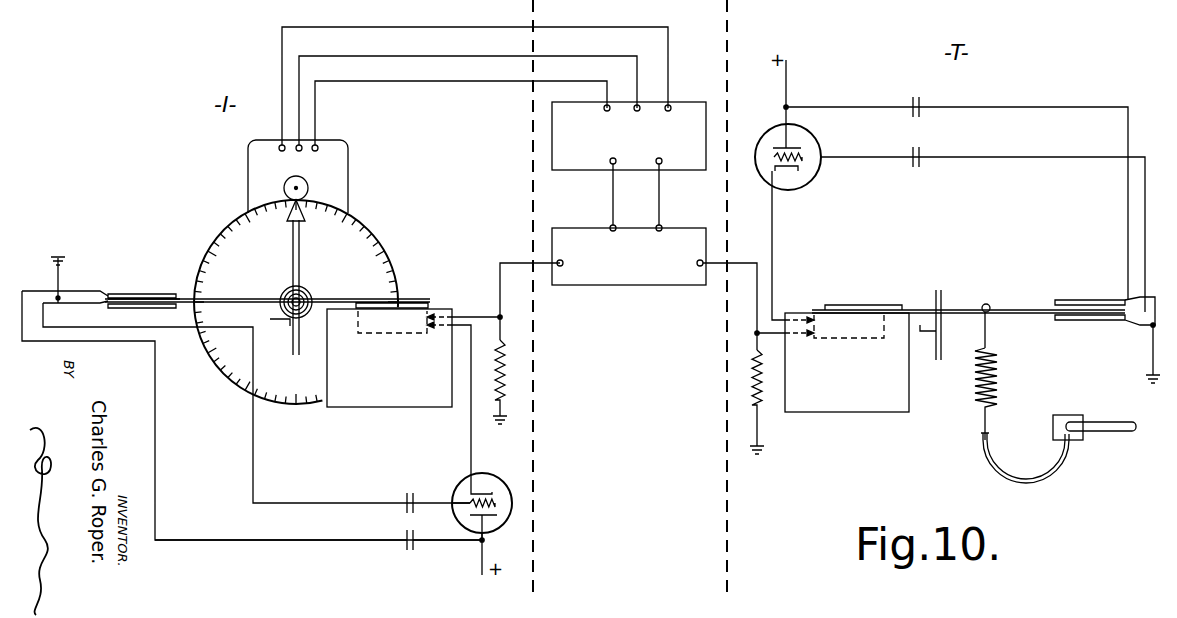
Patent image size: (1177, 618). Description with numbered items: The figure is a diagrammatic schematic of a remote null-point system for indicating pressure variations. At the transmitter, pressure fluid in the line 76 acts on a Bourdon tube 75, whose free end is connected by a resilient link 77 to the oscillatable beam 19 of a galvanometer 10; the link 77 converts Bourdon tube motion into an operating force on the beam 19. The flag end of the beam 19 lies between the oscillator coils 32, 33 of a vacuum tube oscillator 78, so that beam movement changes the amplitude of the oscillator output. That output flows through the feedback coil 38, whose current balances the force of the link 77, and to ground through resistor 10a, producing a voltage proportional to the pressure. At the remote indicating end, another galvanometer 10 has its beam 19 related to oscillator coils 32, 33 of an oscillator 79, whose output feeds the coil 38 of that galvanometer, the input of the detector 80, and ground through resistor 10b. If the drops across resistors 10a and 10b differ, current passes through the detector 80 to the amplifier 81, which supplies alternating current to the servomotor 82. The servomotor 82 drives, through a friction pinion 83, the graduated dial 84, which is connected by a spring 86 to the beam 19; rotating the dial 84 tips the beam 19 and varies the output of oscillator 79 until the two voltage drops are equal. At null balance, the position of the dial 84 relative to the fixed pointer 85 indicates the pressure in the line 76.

The galvanometer 10 is at (618, 360).
The resistor 10a is at (752, 392).
The resistor 10b is at (500, 392).
The oscillatable beam 19 is at (410, 306).
The oscillator coil 32 is at (159, 293).
The oscillator coil 33 is at (150, 312).
The feedback coil 38 is at (356, 328).
The Bourdon tube 75 is at (1033, 483).
The line 76 is at (1108, 436).
The resilient link 77 is at (1002, 387).
The vacuum tube oscillator 78 is at (807, 172).
The oscillator 79 is at (458, 486).
The detector unit 80 is at (630, 286).
The amplifier 81 is at (571, 170).
The servomotor 82 is at (346, 159).
The friction drive wheel or pinion 83 is at (310, 186).
The graduated dial 84 is at (376, 242).
The fixed pointer 85 is at (300, 247).
The spring 86 is at (312, 291).